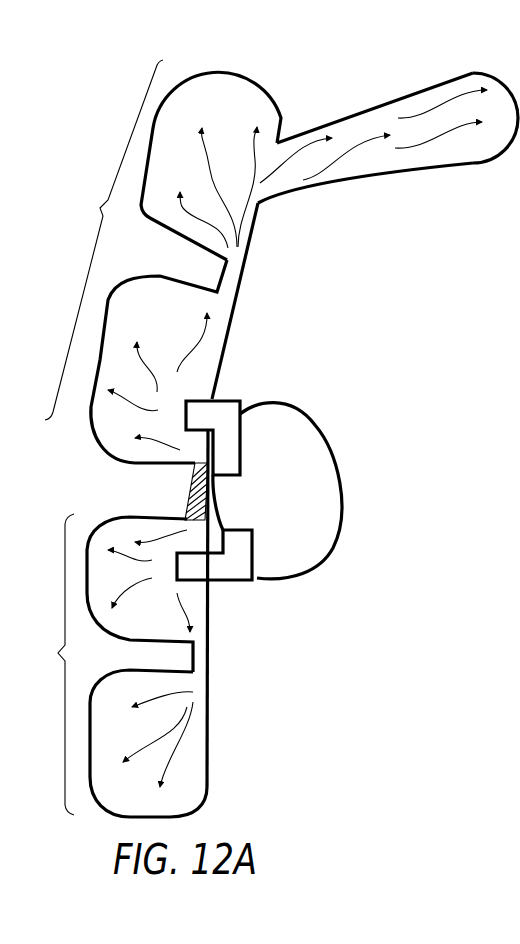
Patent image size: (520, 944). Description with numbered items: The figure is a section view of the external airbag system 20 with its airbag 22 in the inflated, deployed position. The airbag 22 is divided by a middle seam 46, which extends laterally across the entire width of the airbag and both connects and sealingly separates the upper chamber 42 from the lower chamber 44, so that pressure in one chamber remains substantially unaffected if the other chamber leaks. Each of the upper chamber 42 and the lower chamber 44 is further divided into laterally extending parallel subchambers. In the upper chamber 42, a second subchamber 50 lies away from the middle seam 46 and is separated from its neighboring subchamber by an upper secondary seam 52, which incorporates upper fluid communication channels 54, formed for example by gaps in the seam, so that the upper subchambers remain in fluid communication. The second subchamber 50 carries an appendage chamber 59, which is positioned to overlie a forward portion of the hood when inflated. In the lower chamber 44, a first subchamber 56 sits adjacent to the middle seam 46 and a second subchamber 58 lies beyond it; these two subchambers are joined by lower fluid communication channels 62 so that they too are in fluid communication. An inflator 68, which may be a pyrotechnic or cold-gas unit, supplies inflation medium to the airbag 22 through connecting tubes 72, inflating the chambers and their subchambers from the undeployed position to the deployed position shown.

The external airbag system 20 is at (360, 73).
The airbag 22 is at (292, 189).
The upper chamber 42 is at (104, 240).
The lower chamber 44 is at (275, 664).
The middle seam 46 is at (190, 483).
The second subchamber of the upper chamber 50 is at (221, 72).
The upper secondary seam 52 is at (158, 275).
The upper fluid communication channels 54 is at (238, 288).
The first subchamber of the lower chamber 56 is at (136, 643).
The second subchamber of the lower chamber 58 is at (210, 786).
The appendage chamber 59 is at (469, 72).
The lower fluid communication channels 62 is at (212, 662).
The inflator 68 is at (336, 441).
The connecting tubes 72 is at (229, 400).